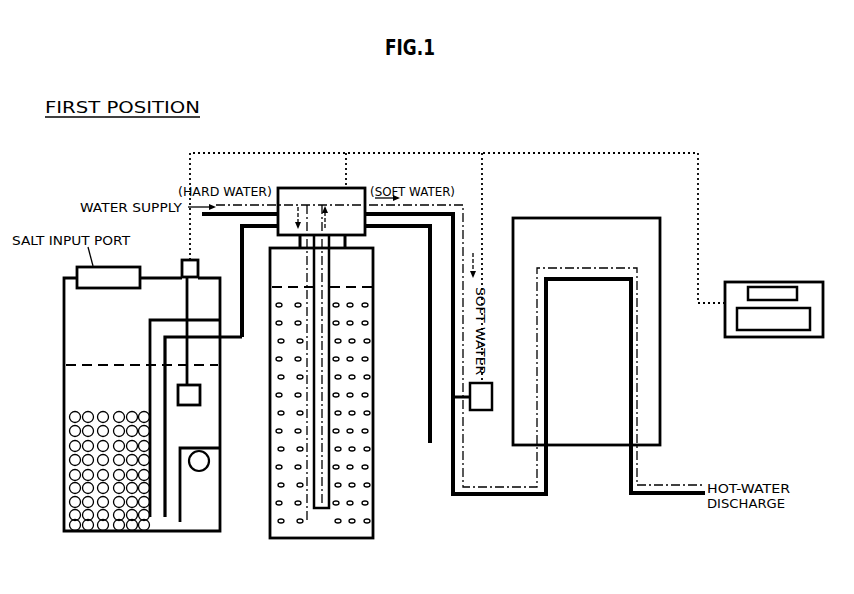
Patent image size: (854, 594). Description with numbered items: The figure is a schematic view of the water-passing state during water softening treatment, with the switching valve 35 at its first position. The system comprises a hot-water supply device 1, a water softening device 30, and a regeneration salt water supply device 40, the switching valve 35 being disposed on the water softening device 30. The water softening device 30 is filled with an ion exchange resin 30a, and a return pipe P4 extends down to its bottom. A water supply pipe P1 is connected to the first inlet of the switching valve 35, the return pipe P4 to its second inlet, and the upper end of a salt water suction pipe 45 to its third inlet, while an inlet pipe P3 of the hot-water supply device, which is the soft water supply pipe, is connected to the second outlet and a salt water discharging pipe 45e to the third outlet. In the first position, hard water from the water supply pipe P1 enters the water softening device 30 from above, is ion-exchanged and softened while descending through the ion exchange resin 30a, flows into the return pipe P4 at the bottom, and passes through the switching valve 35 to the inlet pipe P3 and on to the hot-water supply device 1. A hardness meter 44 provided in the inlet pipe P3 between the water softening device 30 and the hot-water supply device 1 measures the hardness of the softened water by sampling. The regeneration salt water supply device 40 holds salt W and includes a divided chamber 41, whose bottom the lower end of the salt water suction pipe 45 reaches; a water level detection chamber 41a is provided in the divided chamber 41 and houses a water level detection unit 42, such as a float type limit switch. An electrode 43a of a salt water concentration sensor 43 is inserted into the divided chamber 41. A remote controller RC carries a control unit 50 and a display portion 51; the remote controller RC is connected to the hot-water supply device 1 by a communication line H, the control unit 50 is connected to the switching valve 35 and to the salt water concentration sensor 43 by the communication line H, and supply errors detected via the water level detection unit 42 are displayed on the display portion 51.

The hot-water supply device 1 is at (640, 218).
The water softening device 30 is at (382, 349).
The ion exchange resin 30a is at (367, 411).
The switching valve 35 is at (327, 188).
The regeneration salt water supply device 40 is at (58, 306).
The divided chamber 41 is at (160, 337).
The water level detection chamber 41a is at (212, 505).
The water level detection unit 42 is at (211, 461).
The salt water concentration sensor 43 is at (181, 262).
The electrode 43a is at (202, 396).
The hardness meter 44 is at (472, 410).
The salt water suction pipe 45 is at (261, 231).
The salt water discharging pipe 45e is at (383, 229).
The control unit 50 is at (775, 323).
The display portion 51 is at (765, 293).
The water supply pipe P1 is at (227, 216).
The inlet pipe of hot-water supply device P3 is at (451, 209).
The return pipe P4 is at (330, 278).
The communication line H is at (611, 152).
The salt W is at (72, 442).
The remote controller RC is at (776, 304).